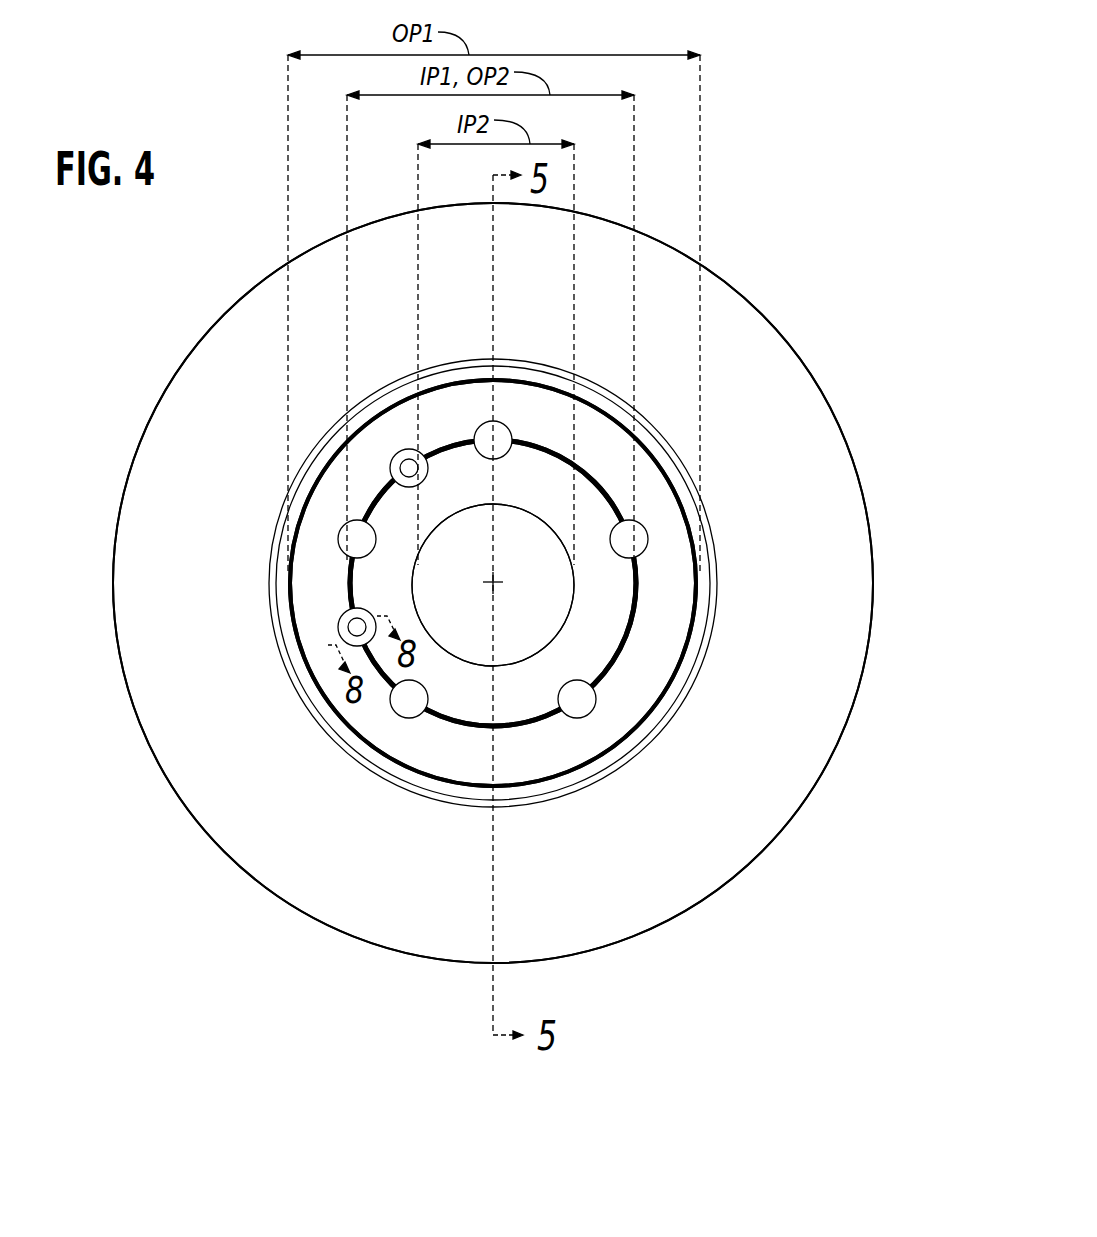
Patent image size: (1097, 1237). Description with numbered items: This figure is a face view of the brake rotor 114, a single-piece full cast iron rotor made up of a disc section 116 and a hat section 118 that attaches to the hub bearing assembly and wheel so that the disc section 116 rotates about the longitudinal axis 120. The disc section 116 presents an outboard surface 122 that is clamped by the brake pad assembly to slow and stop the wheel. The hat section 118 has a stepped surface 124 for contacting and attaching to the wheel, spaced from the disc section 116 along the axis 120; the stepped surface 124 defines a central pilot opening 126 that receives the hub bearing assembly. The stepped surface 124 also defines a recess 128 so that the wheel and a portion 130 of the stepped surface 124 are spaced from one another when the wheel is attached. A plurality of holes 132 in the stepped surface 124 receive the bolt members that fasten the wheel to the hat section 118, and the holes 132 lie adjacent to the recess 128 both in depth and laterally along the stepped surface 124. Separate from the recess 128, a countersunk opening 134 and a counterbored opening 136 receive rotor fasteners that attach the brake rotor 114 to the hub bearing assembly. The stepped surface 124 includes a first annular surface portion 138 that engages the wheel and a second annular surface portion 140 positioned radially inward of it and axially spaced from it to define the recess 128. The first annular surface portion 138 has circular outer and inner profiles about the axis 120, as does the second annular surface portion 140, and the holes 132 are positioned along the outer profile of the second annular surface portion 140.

The brake rotor 114 is at (136, 326).
The disc section 116 is at (133, 456).
The hat section 118 is at (287, 573).
The longitudinal axis 120 is at (480, 583).
The outboard surface 122 is at (233, 505).
The stepped surface 124 is at (305, 612).
The pilot opening 126 is at (548, 643).
The recess 128 is at (543, 706).
The portion of the stepped surface 130 is at (620, 624).
The holes 132 is at (363, 558).
The countersunk opening 134 is at (341, 633).
The counterbored opening 136 is at (401, 450).
The first annular surface portion 138 is at (684, 575).
The second annular surface portion 140 is at (493, 583).